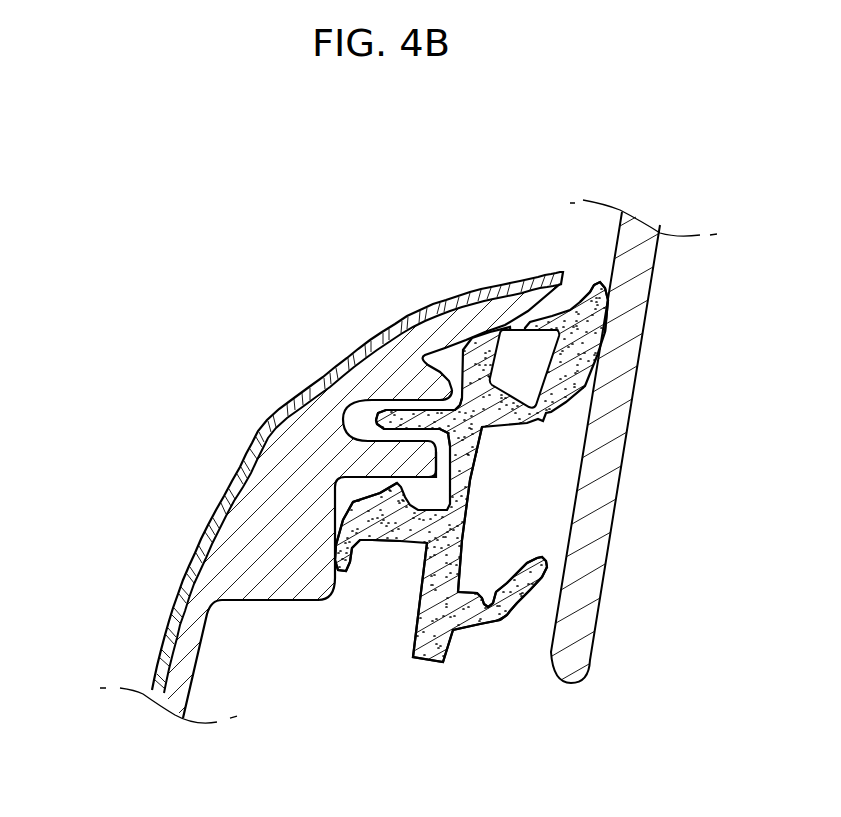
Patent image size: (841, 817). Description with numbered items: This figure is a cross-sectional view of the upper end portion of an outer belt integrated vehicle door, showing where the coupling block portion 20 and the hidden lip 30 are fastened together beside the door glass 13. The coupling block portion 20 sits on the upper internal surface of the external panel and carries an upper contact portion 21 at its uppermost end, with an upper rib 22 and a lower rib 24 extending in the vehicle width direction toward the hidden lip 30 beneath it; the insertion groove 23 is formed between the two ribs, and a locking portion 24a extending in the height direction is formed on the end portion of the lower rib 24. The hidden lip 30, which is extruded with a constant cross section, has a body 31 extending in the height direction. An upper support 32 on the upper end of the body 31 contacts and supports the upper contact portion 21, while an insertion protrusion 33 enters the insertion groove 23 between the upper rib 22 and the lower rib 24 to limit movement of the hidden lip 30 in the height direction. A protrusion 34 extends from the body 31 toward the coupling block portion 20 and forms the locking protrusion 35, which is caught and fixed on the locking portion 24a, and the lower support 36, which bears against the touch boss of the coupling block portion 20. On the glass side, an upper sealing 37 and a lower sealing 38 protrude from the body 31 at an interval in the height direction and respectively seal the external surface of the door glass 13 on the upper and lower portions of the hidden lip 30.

The door glass 13 is at (624, 394).
The coupling block portion 20 is at (137, 255).
The upper contact portion 21 is at (355, 464).
The upper rib 22 is at (353, 501).
The insertion groove 23 is at (299, 432).
The lower rib 24 is at (291, 478).
The locking portion 24a is at (291, 452).
The hidden lip 30 is at (737, 388).
The body 31 is at (589, 510).
The upper support 32 is at (601, 412).
The insertion protrusion 33 is at (548, 470).
The protrusion 34 is at (546, 612).
The locking protrusion 35 is at (527, 604).
The lower support 36 is at (528, 656).
The upper sealing 37 is at (642, 343).
The lower sealing 38 is at (608, 595).